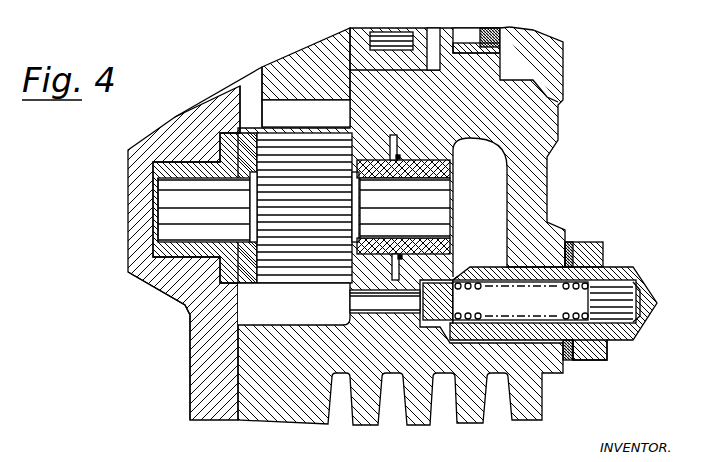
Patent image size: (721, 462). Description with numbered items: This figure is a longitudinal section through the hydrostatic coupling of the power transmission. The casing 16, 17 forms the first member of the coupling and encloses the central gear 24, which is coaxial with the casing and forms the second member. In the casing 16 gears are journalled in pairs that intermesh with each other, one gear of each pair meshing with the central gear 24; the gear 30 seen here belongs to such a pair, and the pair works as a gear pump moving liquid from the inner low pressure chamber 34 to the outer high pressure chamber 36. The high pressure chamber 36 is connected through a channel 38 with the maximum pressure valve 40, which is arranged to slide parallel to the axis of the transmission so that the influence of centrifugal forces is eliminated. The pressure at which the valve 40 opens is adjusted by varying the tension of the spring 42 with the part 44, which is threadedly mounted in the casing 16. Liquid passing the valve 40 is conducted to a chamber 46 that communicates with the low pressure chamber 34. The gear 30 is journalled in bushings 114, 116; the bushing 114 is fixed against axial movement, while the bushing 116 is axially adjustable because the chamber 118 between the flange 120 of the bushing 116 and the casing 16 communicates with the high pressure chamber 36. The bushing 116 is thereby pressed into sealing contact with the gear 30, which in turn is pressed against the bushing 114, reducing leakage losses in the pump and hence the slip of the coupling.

The casing 16 is at (283, 408).
The casing 17 is at (212, 320).
The central gear 24 is at (307, 72).
The gear 30 is at (245, 133).
The inner low pressure chamber 34 is at (248, 88).
The outer high pressure chamber 36 is at (255, 318).
The channel 38 is at (406, 302).
The maximum pressure valve 40 is at (446, 288).
The spring 42 is at (603, 261).
The part 44 is at (607, 341).
The chamber 46 is at (497, 201).
The bushing 114 is at (240, 277).
The bushing 116 is at (350, 280).
The chamber 118 is at (398, 282).
The flange 120 is at (352, 300).